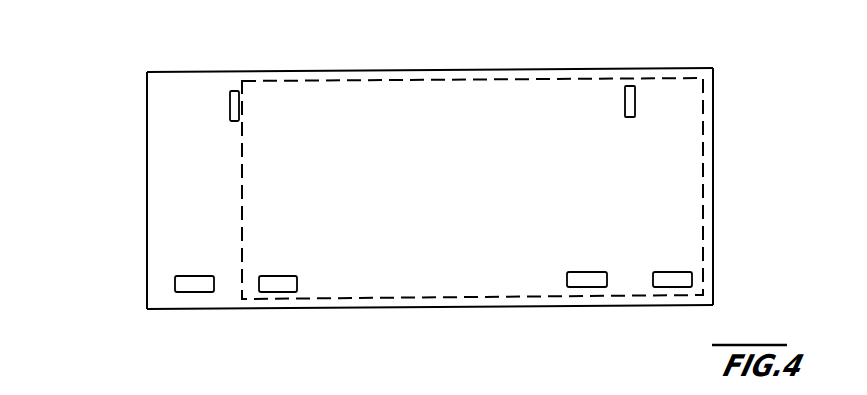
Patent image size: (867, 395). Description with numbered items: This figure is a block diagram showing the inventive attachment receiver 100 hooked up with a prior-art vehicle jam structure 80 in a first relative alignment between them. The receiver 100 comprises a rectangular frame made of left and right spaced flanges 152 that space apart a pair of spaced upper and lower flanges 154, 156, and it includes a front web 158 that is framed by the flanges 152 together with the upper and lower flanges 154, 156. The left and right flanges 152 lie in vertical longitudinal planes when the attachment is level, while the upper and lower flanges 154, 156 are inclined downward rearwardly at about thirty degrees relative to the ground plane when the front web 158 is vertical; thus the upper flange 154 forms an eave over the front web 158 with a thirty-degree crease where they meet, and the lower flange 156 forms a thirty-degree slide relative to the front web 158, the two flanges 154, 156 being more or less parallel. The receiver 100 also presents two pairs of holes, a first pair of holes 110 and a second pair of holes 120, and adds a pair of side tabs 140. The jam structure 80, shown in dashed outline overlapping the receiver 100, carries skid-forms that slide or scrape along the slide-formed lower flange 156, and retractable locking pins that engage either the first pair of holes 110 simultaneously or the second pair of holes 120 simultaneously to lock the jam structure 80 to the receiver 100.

The receiver 100 is at (417, 189).
The left and right flanges 152 is at (147, 95).
The upper flange 154 is at (288, 71).
The lower flange 156 is at (413, 309).
The front web 158 is at (193, 130).
The jam structure 80 is at (556, 78).
The side tabs 140 is at (229, 99).
The second pair of holes 120 is at (183, 292).
The first pair of holes 110 is at (277, 292).